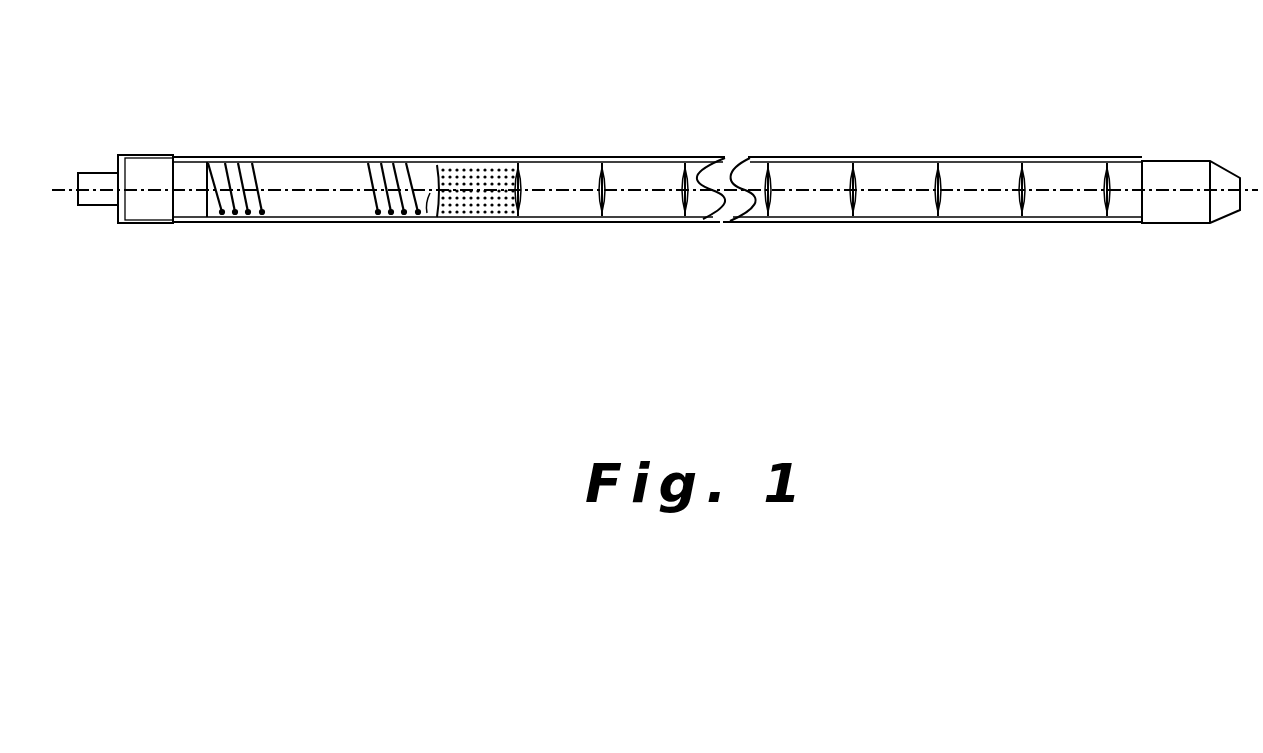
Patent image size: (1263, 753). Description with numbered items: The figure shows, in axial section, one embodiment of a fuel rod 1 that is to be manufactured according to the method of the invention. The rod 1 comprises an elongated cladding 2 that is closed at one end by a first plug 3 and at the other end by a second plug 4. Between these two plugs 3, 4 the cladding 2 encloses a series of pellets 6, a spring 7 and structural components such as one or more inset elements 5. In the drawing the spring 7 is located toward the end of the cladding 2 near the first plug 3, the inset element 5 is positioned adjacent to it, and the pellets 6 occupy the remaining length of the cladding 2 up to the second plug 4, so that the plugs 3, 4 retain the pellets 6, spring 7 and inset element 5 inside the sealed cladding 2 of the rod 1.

The rod 1 is at (888, 134).
The cladding 2 is at (638, 161).
The first plug 3 is at (1192, 162).
The second plug 4 is at (143, 183).
The inset element 5 is at (467, 200).
The pellets 6 is at (560, 200).
The spring 7 is at (390, 161).